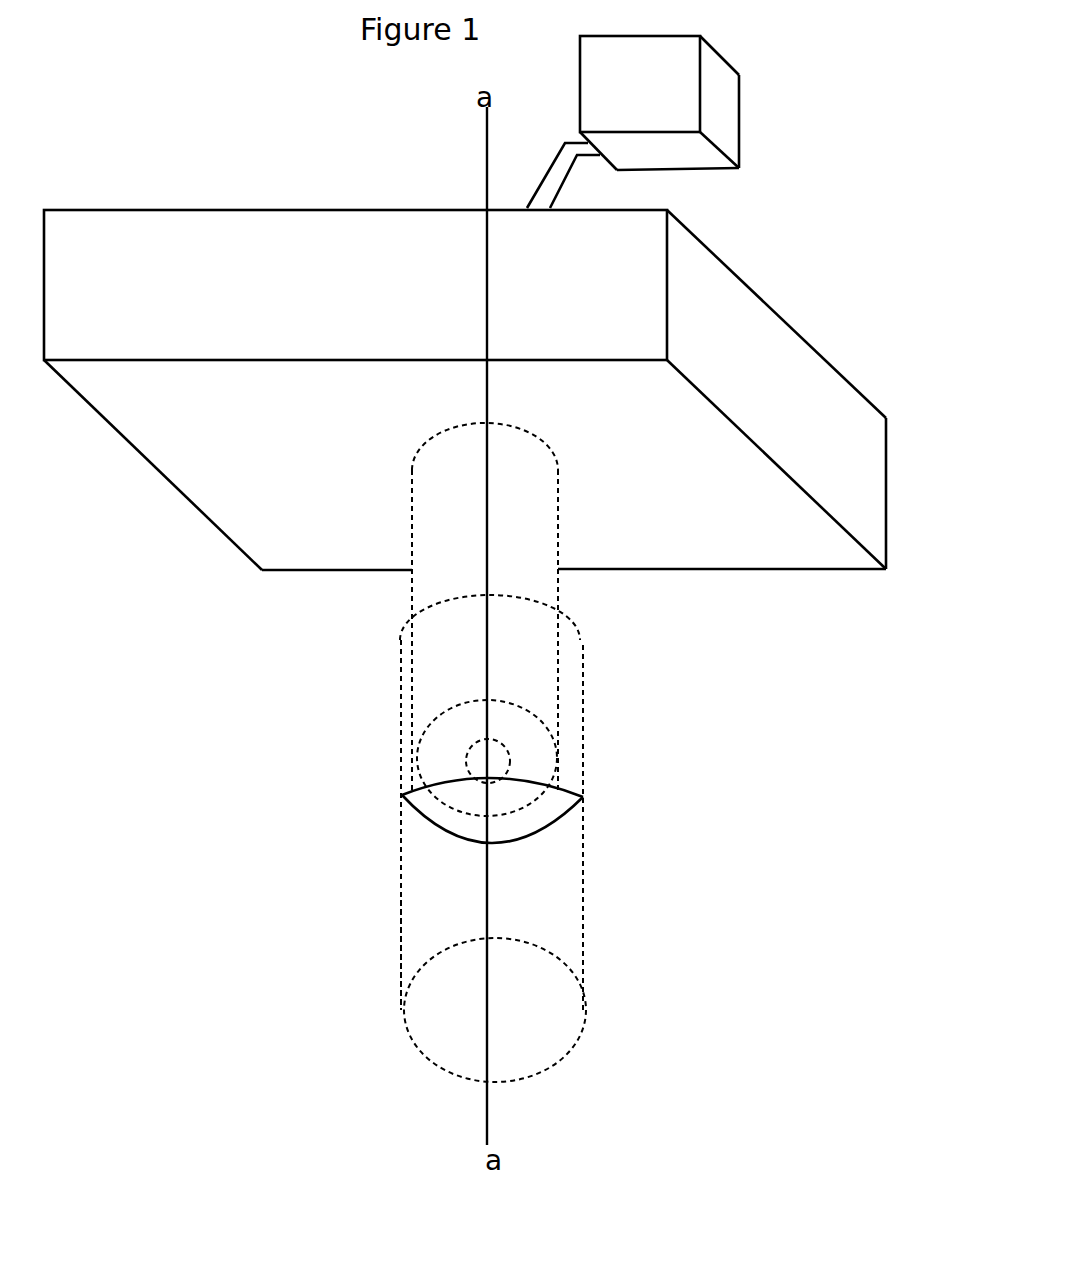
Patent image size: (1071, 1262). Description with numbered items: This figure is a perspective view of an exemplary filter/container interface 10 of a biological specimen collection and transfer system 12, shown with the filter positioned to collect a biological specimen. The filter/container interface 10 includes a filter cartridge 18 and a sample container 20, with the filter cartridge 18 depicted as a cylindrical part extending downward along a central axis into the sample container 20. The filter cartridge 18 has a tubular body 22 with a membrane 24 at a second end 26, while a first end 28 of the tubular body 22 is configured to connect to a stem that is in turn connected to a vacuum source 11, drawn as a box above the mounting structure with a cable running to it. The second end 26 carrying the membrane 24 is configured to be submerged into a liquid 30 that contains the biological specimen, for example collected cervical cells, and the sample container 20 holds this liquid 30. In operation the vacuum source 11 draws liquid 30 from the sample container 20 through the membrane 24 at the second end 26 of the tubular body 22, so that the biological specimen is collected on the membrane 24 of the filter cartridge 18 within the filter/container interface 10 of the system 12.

The filter/container interface 10 is at (377, 687).
The vacuum source 11 is at (718, 97).
The biological specimen collection and transfer system 12 is at (214, 128).
The filter cartridge 18 is at (543, 592).
The sample container 20 is at (402, 833).
The tubular body 22 is at (437, 583).
The membrane 24 is at (500, 759).
The second end 26 is at (532, 672).
The first end 28 is at (533, 483).
The liquid 30 is at (450, 905).